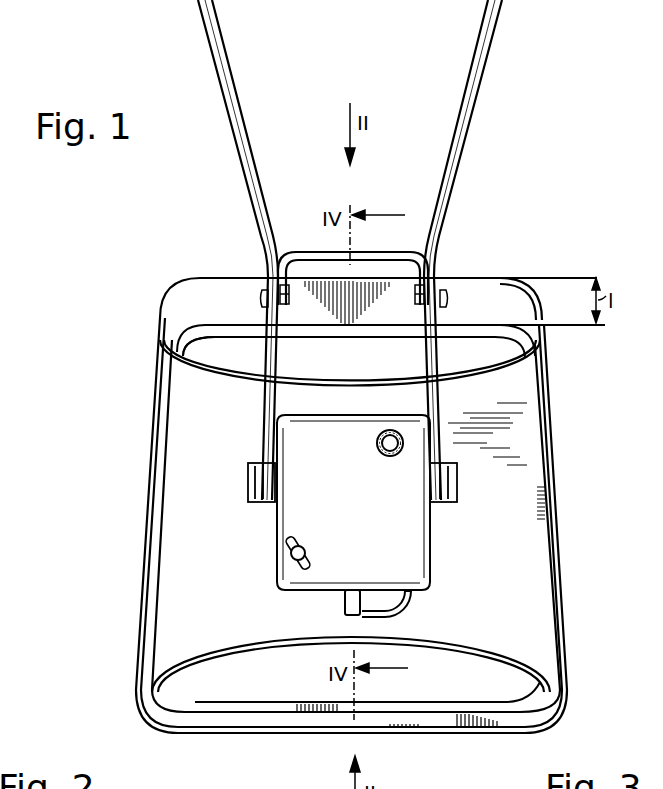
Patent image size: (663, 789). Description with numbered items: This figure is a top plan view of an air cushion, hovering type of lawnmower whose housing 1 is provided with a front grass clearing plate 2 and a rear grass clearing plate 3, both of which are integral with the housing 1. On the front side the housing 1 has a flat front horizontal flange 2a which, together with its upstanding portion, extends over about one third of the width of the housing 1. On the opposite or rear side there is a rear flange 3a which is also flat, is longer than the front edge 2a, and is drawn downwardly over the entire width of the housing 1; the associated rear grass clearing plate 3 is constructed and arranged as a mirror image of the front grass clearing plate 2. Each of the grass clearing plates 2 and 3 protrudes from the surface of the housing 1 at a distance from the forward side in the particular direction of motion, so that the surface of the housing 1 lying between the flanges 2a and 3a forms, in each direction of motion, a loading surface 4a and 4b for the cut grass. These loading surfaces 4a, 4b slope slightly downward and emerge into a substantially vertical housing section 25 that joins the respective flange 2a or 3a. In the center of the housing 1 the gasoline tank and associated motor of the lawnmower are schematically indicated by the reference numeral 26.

The housing 1 is at (185, 483).
The front grass clearing plate 2 is at (210, 657).
The front horizontal flange 2a is at (290, 722).
The rear grass clearing plate 3 is at (460, 378).
The rear flange 3a is at (470, 288).
The loading surface 4a is at (440, 680).
The loading surface 4b is at (217, 356).
The substantially vertical housing section 25 is at (470, 330).
The gasoline tank and associated motor 26 is at (410, 572).